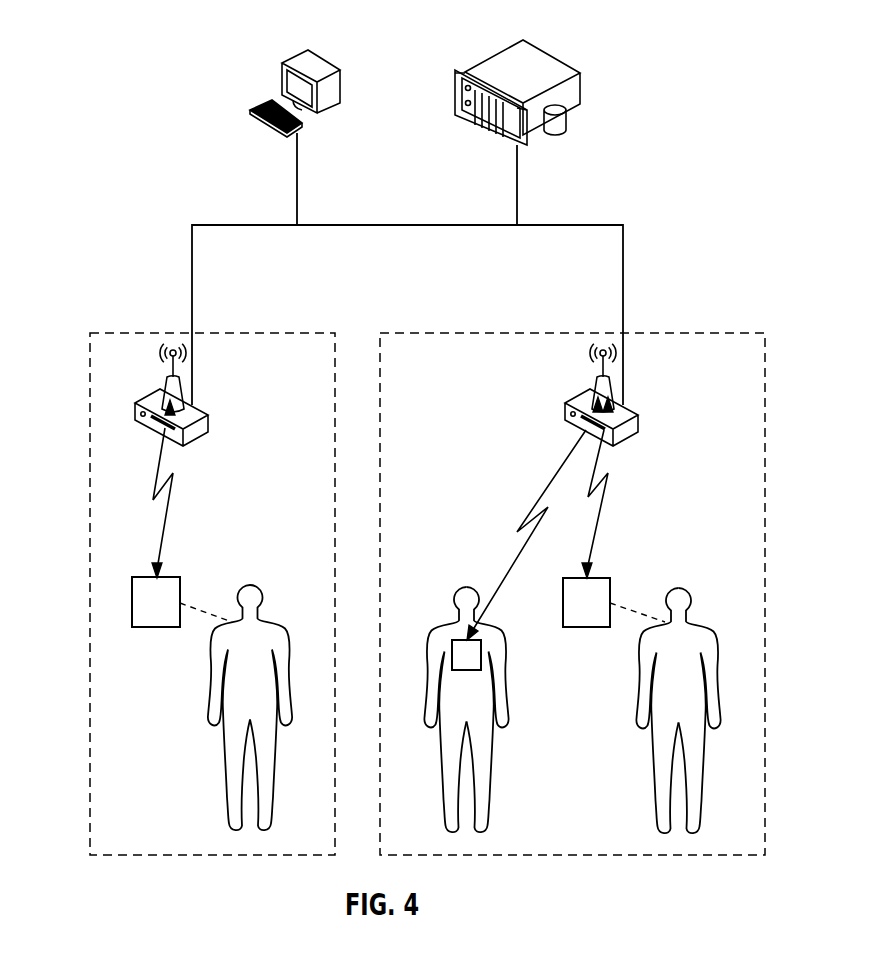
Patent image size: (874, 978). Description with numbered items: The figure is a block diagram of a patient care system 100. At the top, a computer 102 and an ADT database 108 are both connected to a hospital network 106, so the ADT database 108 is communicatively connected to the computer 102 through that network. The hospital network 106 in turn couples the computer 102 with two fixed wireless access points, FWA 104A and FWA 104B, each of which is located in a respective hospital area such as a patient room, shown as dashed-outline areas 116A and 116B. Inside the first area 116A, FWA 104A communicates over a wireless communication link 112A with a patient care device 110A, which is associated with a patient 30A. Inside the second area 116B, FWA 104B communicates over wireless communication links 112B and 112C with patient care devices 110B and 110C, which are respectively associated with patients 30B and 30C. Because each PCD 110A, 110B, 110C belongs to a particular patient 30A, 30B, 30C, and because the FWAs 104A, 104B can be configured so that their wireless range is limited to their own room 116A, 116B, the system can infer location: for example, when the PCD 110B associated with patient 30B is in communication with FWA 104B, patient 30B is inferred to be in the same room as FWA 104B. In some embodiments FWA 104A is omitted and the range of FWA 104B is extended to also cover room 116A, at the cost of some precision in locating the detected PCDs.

The patient care system 100 is at (108, 43).
The computer 102 is at (295, 56).
The FWA 104A is at (210, 425).
The FWA 104B is at (640, 425).
The hospital network 106 is at (252, 224).
The ADT database 108 is at (550, 58).
The patient care device 110A is at (157, 627).
The patient care device 110B is at (587, 627).
The patient care device 110C is at (458, 638).
The wireless communication link 112A is at (166, 527).
The wireless communication link 112B is at (598, 463).
The wireless communication link 112C is at (557, 468).
The hospital area 116A is at (162, 333).
The hospital area 116B is at (692, 333).
The patient 30A is at (266, 622).
The patient 30B is at (694, 623).
The patient 30C is at (489, 628).